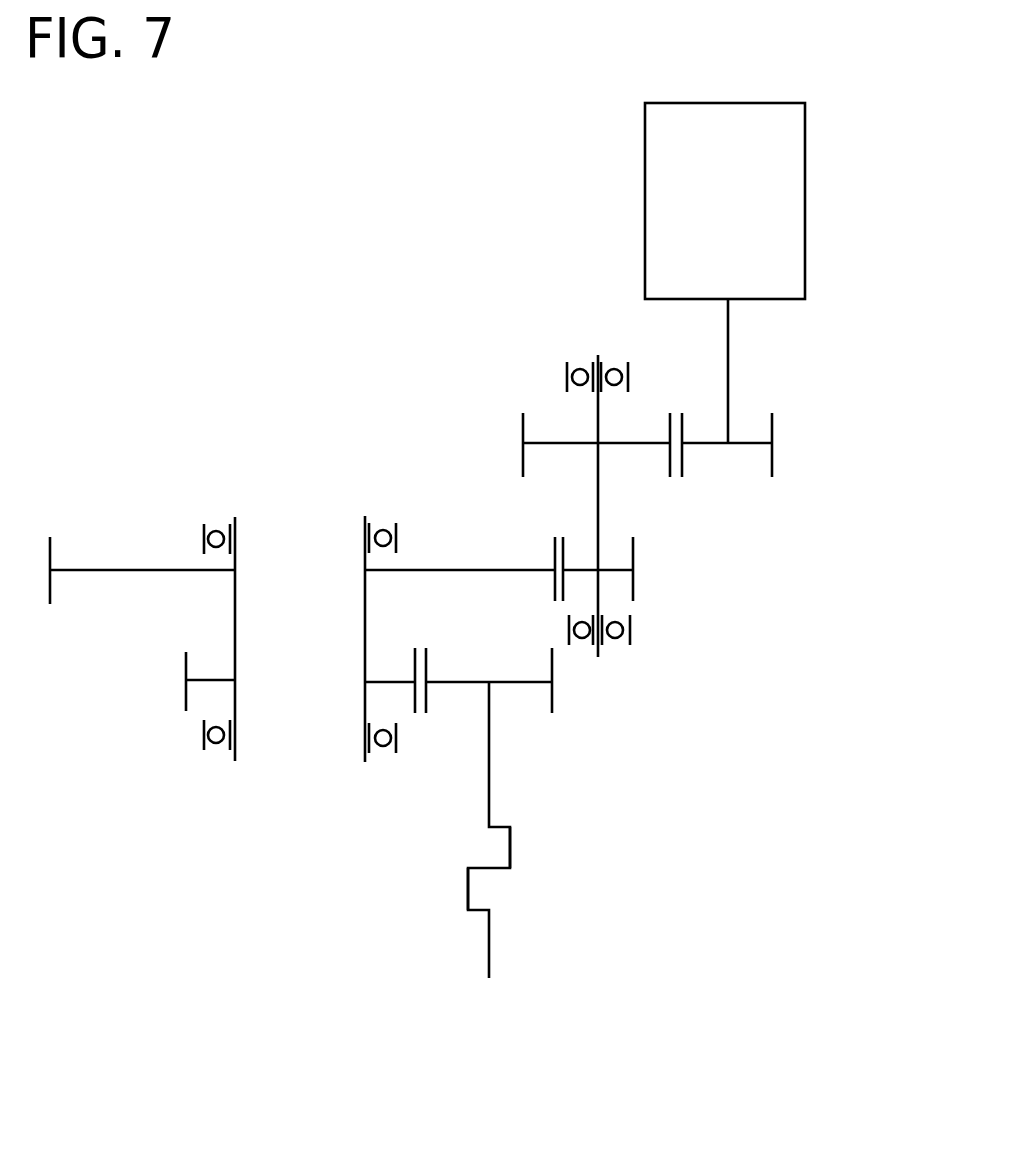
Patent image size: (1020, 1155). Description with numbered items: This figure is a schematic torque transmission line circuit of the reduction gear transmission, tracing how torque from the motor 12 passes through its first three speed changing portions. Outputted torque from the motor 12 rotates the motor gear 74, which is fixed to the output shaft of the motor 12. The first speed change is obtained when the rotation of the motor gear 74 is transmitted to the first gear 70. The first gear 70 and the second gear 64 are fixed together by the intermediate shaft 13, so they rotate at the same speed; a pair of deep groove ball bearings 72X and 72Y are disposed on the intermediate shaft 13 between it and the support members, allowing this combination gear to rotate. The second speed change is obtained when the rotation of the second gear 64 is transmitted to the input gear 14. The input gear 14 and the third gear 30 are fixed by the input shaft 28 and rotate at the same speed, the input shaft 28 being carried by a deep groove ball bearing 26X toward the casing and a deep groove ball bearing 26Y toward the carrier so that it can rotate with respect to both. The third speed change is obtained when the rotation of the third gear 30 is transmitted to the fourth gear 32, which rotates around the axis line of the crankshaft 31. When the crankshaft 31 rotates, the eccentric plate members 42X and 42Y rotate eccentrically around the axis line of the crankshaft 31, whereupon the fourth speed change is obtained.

The motor 12 is at (770, 180).
The intermediate shaft 13 is at (598, 499).
The input gear 14 is at (437, 568).
The deep groove ball bearing 26X is at (215, 518).
The deep groove ball bearing 26Y is at (217, 757).
The input shaft 28 is at (234, 605).
The third gear 30 is at (403, 683).
The crankshaft 31 is at (489, 742).
The fourth gear 32 is at (462, 683).
The eccentric plate member 42X is at (511, 845).
The eccentric plate member 42Y is at (469, 888).
The second gear 64 is at (615, 568).
The first gear 70 is at (552, 442).
The deep groove ball bearing 72X is at (585, 360).
The deep groove ball bearing 72Y is at (614, 647).
The motor gear 74 is at (747, 442).